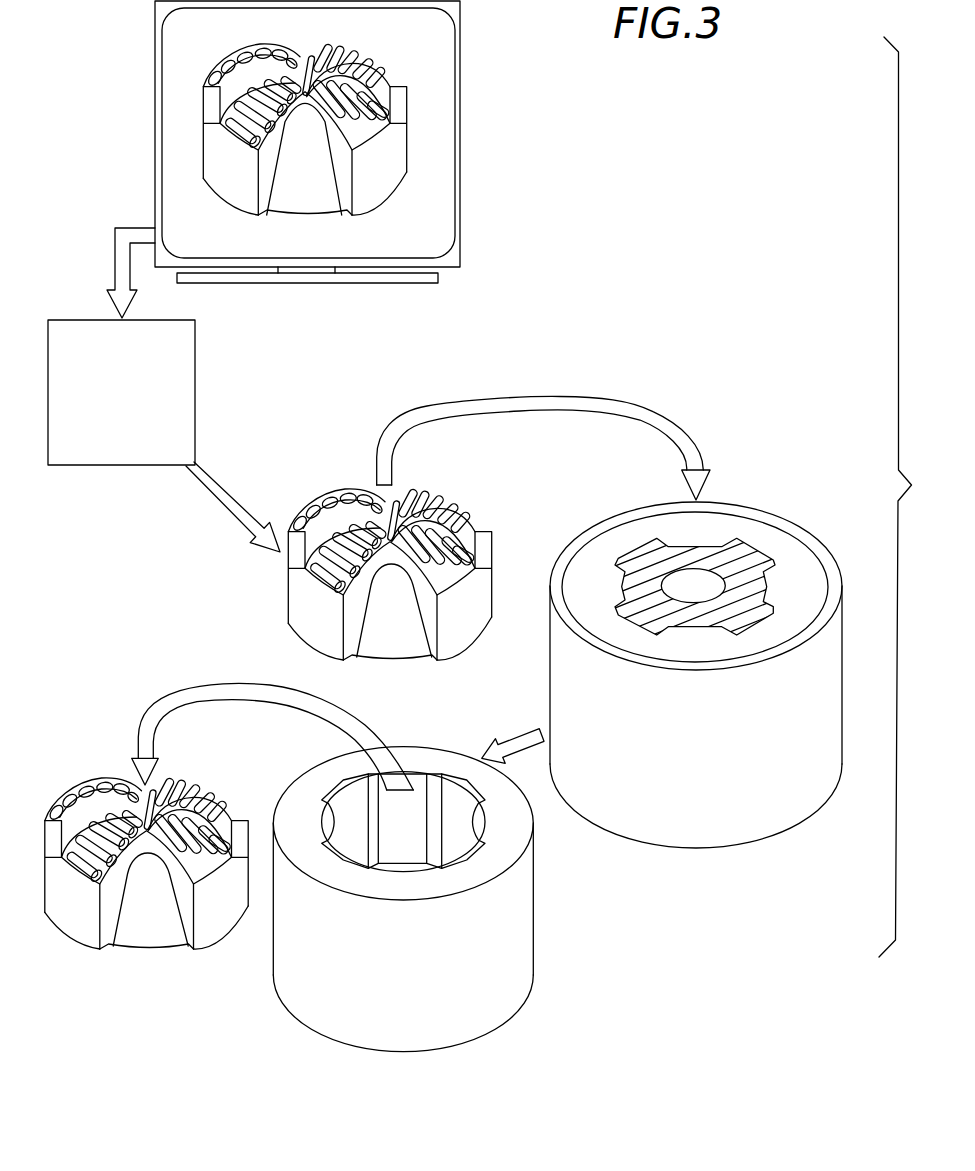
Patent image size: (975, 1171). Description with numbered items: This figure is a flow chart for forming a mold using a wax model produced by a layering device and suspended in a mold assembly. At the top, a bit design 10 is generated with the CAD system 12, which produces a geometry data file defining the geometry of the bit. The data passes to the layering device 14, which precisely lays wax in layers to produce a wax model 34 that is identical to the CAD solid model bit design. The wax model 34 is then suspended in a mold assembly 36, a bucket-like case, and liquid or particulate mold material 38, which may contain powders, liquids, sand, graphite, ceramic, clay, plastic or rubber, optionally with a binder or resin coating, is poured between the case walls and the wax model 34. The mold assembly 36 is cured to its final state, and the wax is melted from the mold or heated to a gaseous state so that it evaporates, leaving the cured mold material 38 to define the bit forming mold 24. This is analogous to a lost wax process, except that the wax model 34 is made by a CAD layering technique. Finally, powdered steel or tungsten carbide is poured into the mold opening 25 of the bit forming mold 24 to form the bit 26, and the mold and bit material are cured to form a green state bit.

The bit design 10 is at (398, 87).
The CAD system 12 is at (155, 98).
The layering device 14 is at (195, 417).
The wax model 34 is at (312, 627).
The mold assembly 36 is at (834, 573).
The mold material 38 is at (770, 532).
The bit forming mold 24 is at (413, 777).
The mold opening 25 is at (408, 847).
The bit 26 is at (237, 815).